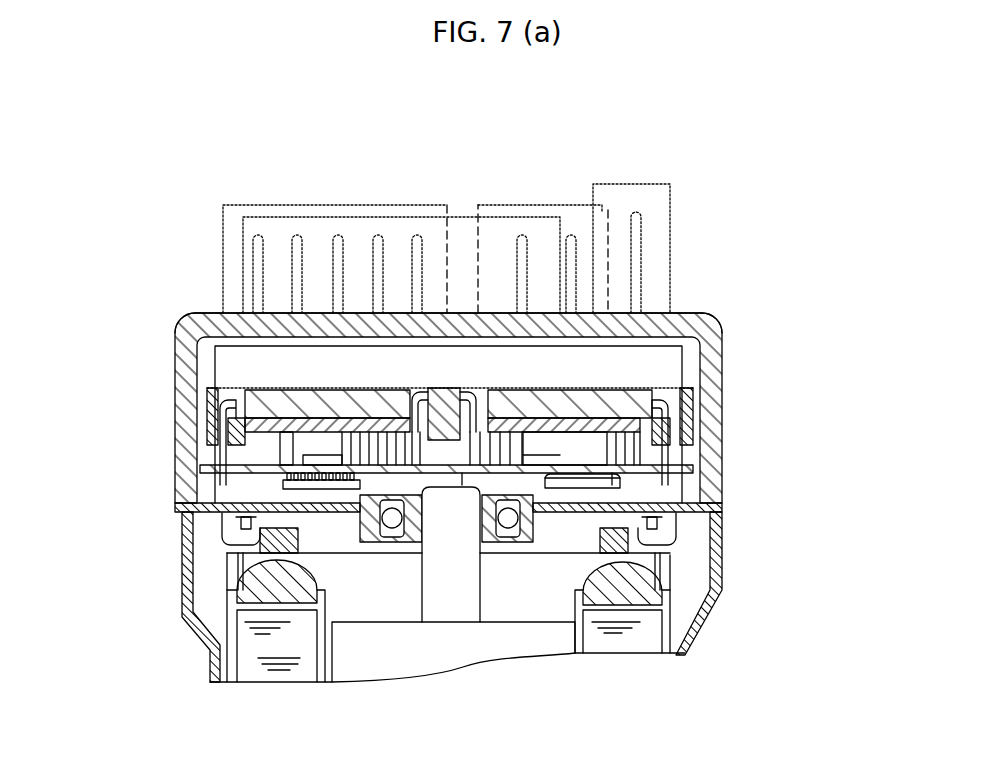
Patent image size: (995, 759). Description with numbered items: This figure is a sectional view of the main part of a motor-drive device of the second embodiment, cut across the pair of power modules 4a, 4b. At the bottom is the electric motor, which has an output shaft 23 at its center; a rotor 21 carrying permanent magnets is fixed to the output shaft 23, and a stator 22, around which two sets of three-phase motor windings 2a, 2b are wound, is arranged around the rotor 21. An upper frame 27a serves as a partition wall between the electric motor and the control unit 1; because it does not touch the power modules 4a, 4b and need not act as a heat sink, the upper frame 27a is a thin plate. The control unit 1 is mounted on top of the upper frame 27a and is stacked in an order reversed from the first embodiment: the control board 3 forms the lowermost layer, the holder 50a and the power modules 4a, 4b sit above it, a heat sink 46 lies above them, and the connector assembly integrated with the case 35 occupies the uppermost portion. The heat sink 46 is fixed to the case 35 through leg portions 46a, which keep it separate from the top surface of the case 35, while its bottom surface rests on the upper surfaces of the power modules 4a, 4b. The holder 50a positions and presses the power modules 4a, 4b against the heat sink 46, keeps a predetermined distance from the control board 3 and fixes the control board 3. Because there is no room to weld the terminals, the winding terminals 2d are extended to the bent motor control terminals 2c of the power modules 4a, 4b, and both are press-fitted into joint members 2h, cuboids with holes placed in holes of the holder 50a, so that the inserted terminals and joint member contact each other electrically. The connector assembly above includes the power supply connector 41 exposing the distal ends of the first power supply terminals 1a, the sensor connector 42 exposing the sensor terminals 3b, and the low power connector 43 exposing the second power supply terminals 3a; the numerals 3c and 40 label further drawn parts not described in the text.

The control unit 1 is at (162, 353).
The first power supply terminals 1a is at (638, 212).
The three-phase motor windings 2a is at (245, 585).
The three-phase motor windings 2b is at (448, 636).
The motor control terminals 2c is at (657, 565).
The winding terminals 2d is at (222, 527).
The joint members 2h is at (220, 433).
The control board 3 is at (640, 484).
The second power supply terminals 3a is at (522, 235).
The sensor terminals 3b is at (258, 236).
The connector base 3c is at (693, 480).
The power module 4a is at (655, 398).
The power module 4b is at (215, 403).
The rotor 21 is at (408, 660).
The stator 22 is at (243, 662).
The output shaft 23 is at (473, 593).
The upper frame 27a is at (168, 507).
The case 35 is at (178, 488).
The connector housing 40 is at (340, 218).
The power supply connector 41 is at (670, 242).
The sensor connector 42 is at (247, 204).
The low power connector 43 is at (535, 203).
The heat sink 46 is at (690, 351).
The leg portions 46a is at (210, 312).
The holder 50a is at (523, 445).